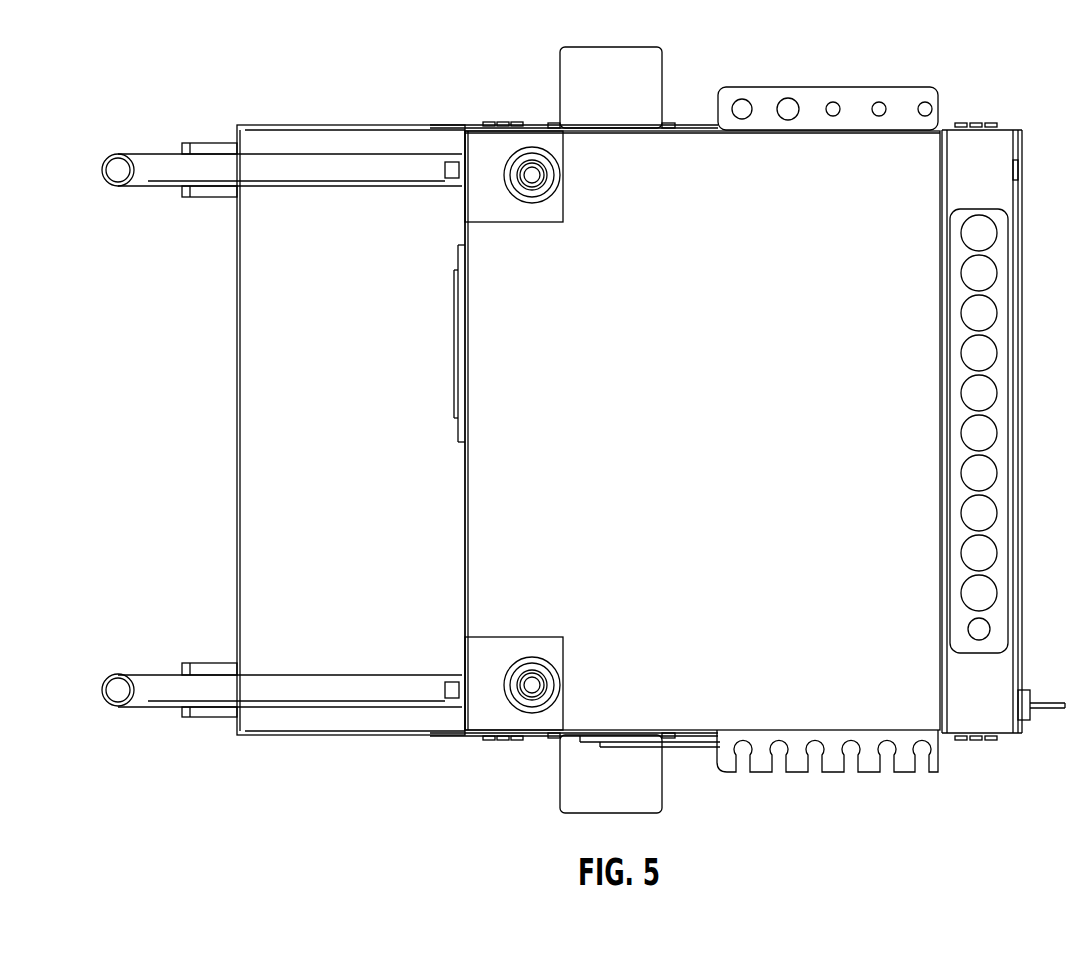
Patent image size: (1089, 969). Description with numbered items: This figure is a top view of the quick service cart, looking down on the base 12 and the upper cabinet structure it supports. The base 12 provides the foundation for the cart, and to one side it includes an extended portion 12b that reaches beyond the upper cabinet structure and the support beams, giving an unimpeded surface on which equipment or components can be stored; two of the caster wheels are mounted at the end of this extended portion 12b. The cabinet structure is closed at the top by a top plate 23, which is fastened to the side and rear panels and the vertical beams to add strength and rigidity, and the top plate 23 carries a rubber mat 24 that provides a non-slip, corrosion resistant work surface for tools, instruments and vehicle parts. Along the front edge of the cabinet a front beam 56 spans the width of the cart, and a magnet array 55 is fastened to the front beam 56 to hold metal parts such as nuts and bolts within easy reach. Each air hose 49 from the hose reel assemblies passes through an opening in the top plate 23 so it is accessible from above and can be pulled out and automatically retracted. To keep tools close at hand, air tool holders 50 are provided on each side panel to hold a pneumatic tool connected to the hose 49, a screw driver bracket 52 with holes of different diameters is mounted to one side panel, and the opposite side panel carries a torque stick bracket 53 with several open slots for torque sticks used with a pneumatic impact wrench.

The base 12 is at (318, 736).
The extended portion 12b is at (353, 453).
The top plate 23 is at (927, 672).
The rubber mat 24 is at (765, 413).
The hose 49 is at (548, 182).
The air tool holder 50 is at (650, 70).
The screw driver bracket 52 is at (912, 87).
The torque stick bracket 53 is at (932, 773).
The magnet array 55 is at (1010, 233).
The front beam 56 is at (990, 172).